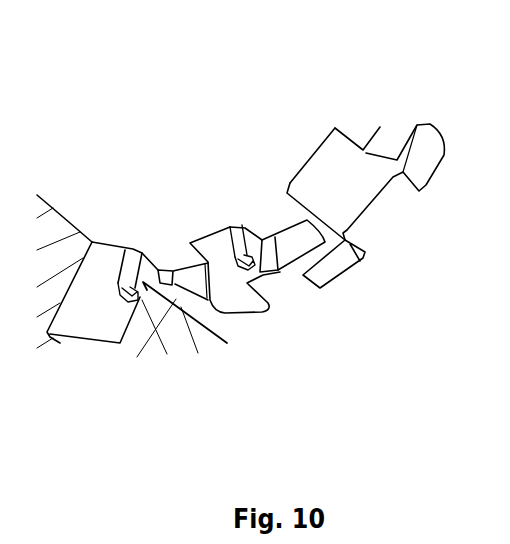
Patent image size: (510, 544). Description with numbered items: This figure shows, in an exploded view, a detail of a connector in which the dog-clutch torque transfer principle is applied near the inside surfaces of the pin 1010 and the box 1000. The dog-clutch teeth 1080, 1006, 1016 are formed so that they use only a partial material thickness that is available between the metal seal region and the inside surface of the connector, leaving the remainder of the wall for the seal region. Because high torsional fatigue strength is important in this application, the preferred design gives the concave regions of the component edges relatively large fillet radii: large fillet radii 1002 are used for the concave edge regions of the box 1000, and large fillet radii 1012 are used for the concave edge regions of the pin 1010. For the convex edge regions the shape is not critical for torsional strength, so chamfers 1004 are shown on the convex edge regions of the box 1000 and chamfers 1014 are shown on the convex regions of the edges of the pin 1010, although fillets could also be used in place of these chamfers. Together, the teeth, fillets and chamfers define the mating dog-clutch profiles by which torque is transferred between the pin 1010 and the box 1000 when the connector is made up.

The box 1000 is at (142, 295).
The fillet radii 1002 is at (363, 258).
The chamfers 1004 is at (292, 268).
The dog-clutch teeth 1006 is at (375, 198).
The pin 1010 is at (92, 210).
The fillet radii 1012 is at (244, 264).
The chamfers 1014 is at (322, 245).
The dog-clutch teeth 1016 is at (318, 148).
The dog-clutch teeth 1080 is at (192, 283).